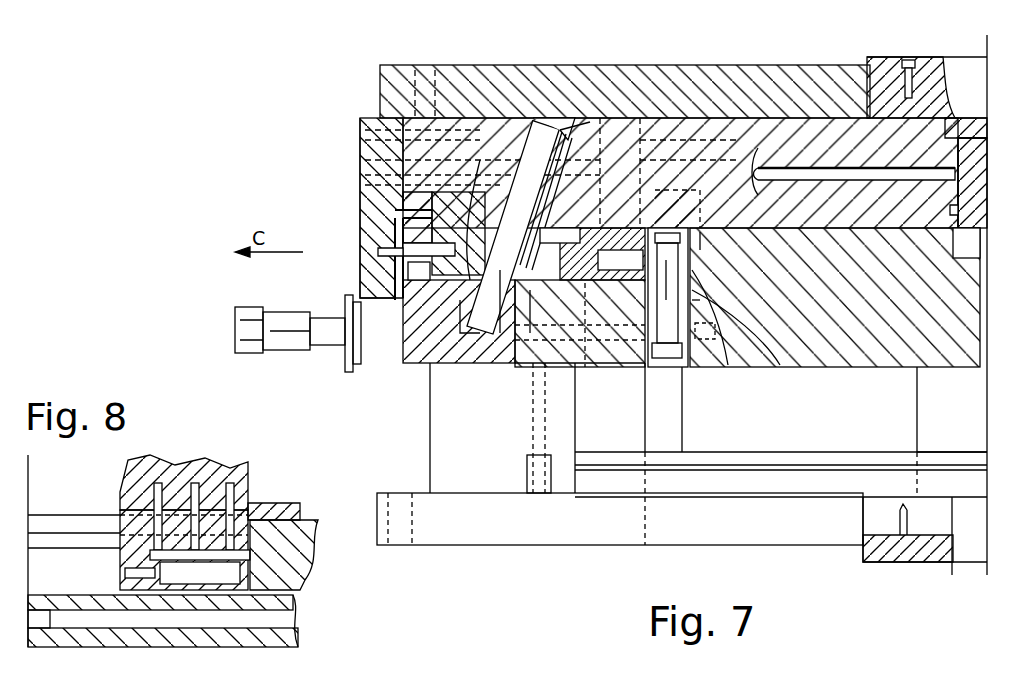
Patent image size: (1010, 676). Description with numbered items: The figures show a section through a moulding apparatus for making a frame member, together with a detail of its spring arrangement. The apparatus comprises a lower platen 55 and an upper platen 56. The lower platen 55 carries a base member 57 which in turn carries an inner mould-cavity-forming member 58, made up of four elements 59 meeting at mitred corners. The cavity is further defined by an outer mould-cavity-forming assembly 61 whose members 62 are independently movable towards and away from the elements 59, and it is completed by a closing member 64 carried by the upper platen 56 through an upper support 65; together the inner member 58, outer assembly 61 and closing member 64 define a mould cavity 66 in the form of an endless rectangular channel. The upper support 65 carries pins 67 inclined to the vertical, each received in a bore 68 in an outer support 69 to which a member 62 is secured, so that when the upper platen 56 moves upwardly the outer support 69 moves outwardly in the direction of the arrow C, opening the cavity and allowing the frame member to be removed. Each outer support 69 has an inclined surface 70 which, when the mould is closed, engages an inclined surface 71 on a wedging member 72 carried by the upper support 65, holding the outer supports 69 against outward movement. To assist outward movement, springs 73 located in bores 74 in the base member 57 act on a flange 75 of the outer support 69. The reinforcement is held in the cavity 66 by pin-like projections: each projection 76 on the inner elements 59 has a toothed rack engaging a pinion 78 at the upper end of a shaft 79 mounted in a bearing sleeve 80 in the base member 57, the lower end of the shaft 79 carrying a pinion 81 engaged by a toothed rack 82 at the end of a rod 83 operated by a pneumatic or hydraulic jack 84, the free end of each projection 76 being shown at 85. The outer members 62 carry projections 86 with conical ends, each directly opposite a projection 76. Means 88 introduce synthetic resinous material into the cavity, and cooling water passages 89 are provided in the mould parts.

In FIG. 7, the lower platen 55 is at (952, 428).
In FIG. 7, the upper platen 56 is at (805, 95).
In FIG. 7, the base member 57 is at (866, 320).
In FIG. 8, the base member 57 is at (305, 525).
In FIG. 7, the inner mould-cavity-forming member 58 is at (598, 300).
In FIG. 7, the element of inner member 59 is at (714, 287).
In FIG. 7, the outer mould-cavity-forming assembly 61 is at (518, 352).
In FIG. 7, the member of outer assembly 62 is at (565, 135).
In FIG. 7, the closing member 64 is at (660, 135).
In FIG. 7, the upper support 65 is at (748, 135).
In FIG. 7, the mould cavity 66 is at (706, 135).
In FIG. 7, the pin 67 is at (478, 160).
In FIG. 7, the bore 68 is at (395, 264).
In FIG. 7, the outer support 69 is at (415, 212).
In FIG. 8, the outer support 69 is at (185, 470).
In FIG. 7, the inclined surface 70 is at (400, 240).
In FIG. 7, the inclined surface 71 is at (430, 180).
In FIG. 7, the wedging member 72 is at (442, 118).
In FIG. 8, the spring 73 is at (300, 580).
In FIG. 8, the bore 74 is at (305, 605).
In FIG. 8, the flange 75 is at (135, 558).
In FIG. 7, the projection 76 is at (616, 290).
In FIG. 7, the pinion 78 is at (717, 253).
In FIG. 7, the shaft 79 is at (740, 365).
In FIG. 7, the bearing sleeve 80 is at (785, 366).
In FIG. 7, the pinion 81 is at (658, 368).
In FIG. 7, the toothed rack 82 is at (698, 365).
In FIG. 7, the rod 83 is at (410, 365).
In FIG. 7, the jack 84 is at (276, 355).
In FIG. 7, the free end of projection 85 is at (677, 209).
In FIG. 7, the projection 86 is at (555, 128).
In FIG. 7, the means for introducing synthetic resinous material 88 is at (868, 165).
In FIG. 7, the cooling water passage 89 is at (604, 200).